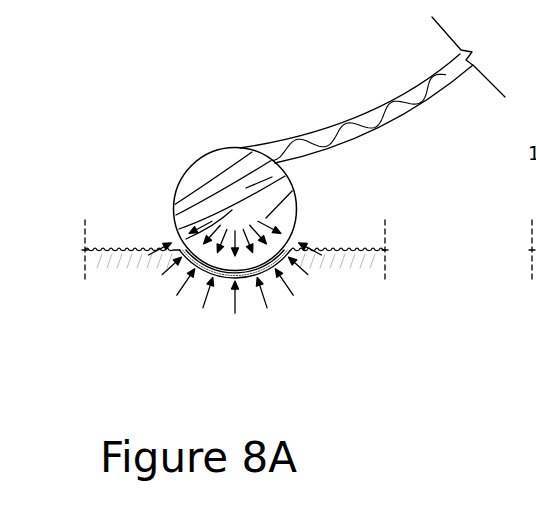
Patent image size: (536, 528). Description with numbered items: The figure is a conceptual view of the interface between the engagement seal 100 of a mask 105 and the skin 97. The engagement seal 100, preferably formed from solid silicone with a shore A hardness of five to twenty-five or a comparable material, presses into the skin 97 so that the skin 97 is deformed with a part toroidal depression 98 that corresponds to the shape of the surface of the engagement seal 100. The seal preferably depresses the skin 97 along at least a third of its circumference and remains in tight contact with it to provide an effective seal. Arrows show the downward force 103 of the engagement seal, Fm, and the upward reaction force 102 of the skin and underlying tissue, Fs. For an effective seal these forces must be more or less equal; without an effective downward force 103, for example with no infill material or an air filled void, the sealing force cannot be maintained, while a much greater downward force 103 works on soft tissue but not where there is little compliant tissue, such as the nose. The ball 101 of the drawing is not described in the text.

The skin 97 is at (118, 252).
The part toroidal depression 98 is at (199, 260).
The engagement seal 100 is at (160, 194).
The ball 101 is at (262, 216).
The upward reaction force of the skin 102 is at (248, 338).
The downward force of the engagement seal 103 is at (219, 238).
The mask 105 is at (399, 97).